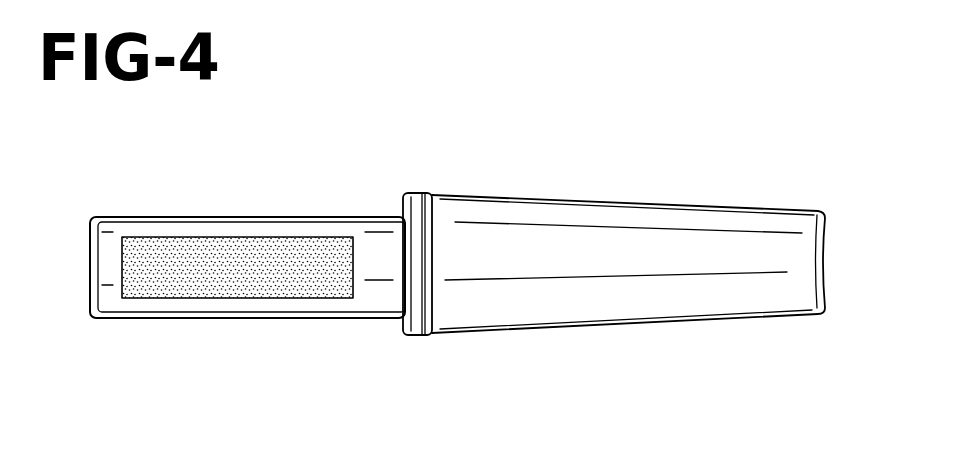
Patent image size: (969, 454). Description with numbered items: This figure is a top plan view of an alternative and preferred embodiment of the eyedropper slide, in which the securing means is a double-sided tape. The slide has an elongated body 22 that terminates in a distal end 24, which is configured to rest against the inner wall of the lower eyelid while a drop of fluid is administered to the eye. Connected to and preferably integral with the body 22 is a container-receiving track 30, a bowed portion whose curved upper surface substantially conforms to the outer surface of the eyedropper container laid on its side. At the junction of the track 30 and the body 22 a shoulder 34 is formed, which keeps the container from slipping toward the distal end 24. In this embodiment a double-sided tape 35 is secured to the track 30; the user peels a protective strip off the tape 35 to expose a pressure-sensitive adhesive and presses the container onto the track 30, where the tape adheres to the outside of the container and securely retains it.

The elongated body 22 is at (608, 243).
The distal end 24 is at (820, 263).
The container-receiving track 30 is at (113, 310).
The shoulder 34 is at (402, 287).
The double-sided tape 35 is at (295, 242).